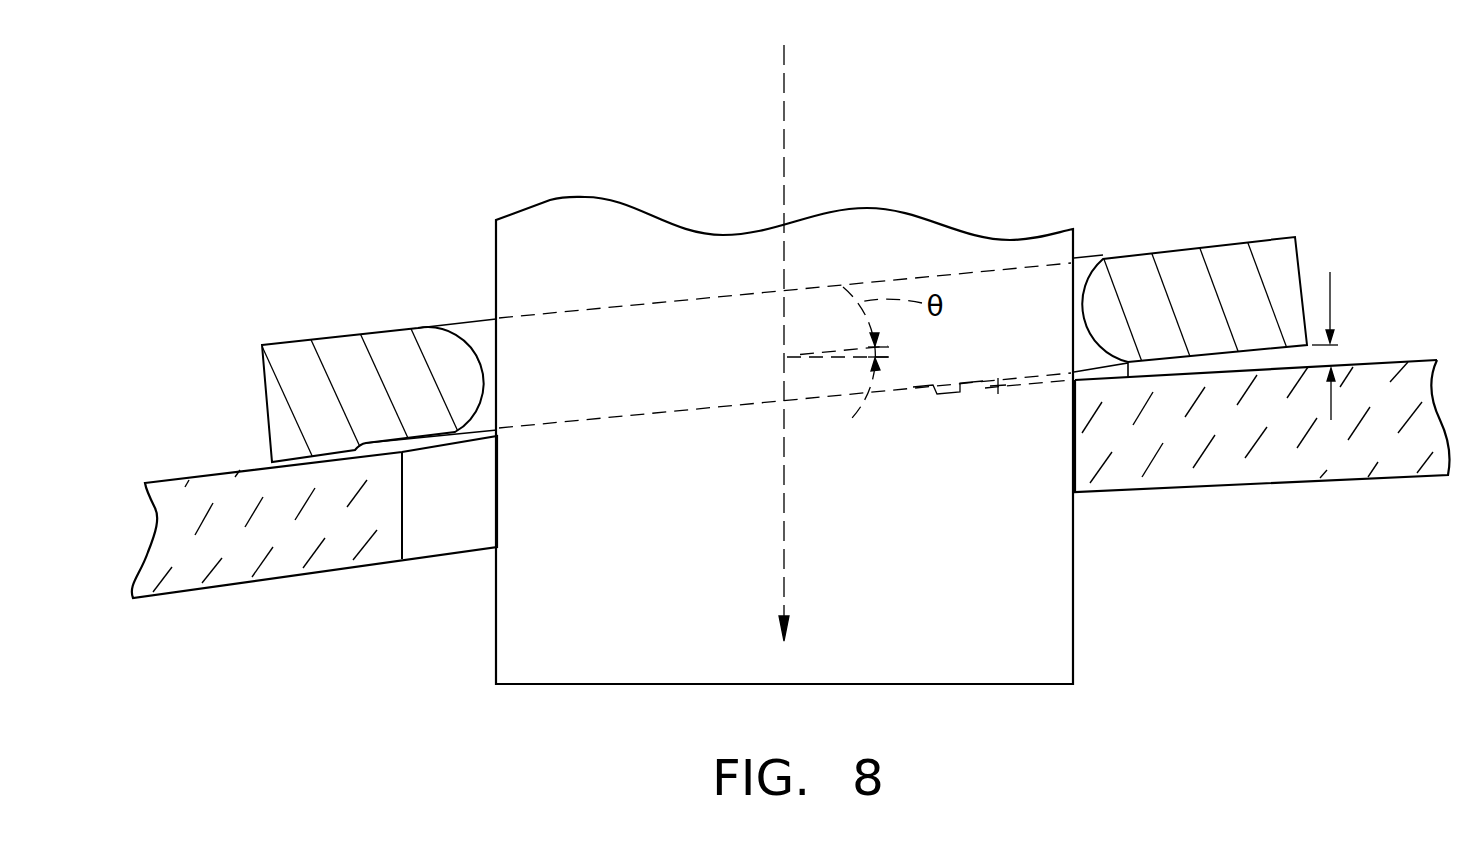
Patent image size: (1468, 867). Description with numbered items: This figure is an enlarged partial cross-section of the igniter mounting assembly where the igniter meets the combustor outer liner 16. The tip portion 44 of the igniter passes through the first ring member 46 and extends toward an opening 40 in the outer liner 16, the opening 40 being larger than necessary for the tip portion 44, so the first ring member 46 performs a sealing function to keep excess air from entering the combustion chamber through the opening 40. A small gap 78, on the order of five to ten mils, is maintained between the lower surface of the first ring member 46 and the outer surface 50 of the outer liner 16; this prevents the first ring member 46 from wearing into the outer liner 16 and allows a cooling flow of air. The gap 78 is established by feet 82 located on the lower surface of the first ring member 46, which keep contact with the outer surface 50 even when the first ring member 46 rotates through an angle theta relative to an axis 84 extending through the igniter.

The outer liner 16 is at (1313, 453).
The opening 40 is at (402, 530).
The tip portion 44 is at (1027, 633).
The first ring member 46 is at (1273, 278).
The outer surface 50 is at (1380, 358).
The gap 78 is at (1331, 293).
The feet 82 is at (999, 390).
The axis 84 is at (786, 523).